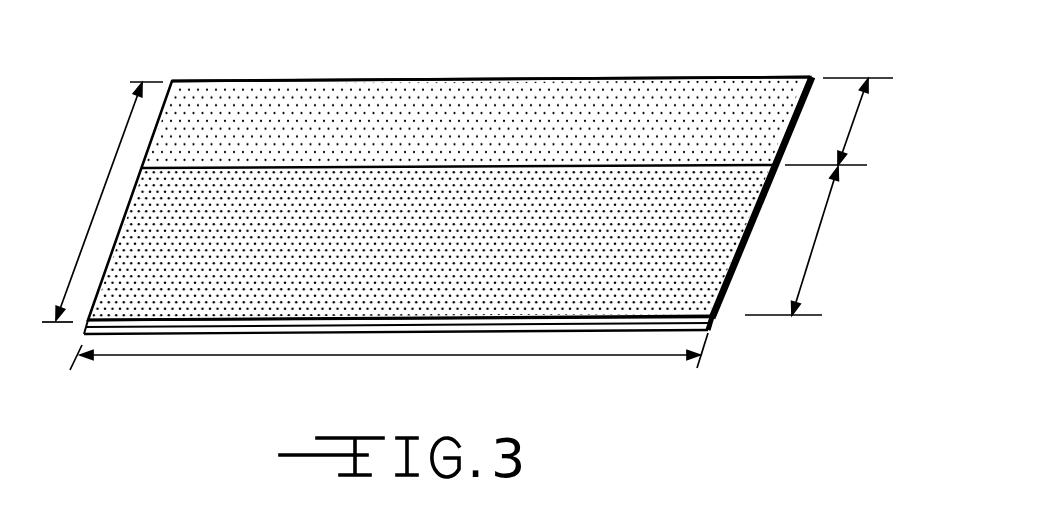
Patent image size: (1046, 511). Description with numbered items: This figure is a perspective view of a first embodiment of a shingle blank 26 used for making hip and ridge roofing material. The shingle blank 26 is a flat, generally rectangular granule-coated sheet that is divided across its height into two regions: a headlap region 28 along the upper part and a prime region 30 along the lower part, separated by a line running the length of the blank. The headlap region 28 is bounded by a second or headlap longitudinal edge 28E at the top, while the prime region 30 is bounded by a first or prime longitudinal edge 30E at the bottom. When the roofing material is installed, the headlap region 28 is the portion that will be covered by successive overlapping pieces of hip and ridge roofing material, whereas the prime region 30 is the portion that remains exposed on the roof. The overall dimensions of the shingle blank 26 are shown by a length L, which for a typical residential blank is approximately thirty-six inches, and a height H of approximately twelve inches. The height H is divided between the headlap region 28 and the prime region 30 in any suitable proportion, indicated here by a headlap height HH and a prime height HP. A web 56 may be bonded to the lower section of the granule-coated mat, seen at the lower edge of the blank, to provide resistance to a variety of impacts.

The shingle blank 26 is at (157, 108).
The headlap region 28 is at (735, 118).
The headlap longitudinal edge 28E is at (648, 77).
The prime region 30 is at (720, 245).
The prime longitudinal edge 30E is at (583, 330).
The web 56 is at (84, 329).
The height H is at (106, 179).
The headlap height HH is at (850, 118).
The prime height HP is at (822, 228).
The length L is at (387, 357).